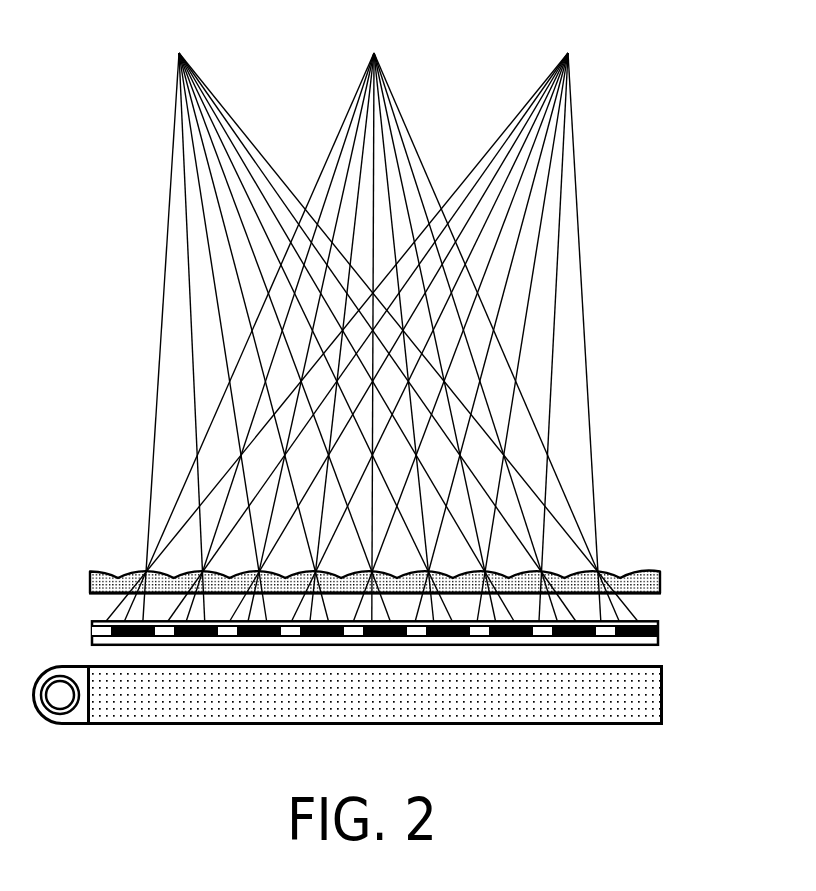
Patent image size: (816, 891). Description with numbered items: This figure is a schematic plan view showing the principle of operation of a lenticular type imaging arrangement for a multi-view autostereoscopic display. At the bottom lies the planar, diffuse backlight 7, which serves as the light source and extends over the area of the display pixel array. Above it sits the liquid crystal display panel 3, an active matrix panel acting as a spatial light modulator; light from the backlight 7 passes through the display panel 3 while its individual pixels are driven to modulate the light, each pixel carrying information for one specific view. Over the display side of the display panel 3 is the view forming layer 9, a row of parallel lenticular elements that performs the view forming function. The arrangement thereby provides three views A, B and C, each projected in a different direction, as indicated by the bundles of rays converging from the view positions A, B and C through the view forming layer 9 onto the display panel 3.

The view A is at (390, 320).
The view B is at (372, 320).
The view C is at (353, 320).
The view forming layer 9 is at (676, 584).
The display panel 3 is at (676, 632).
The backlight 7 is at (676, 697).